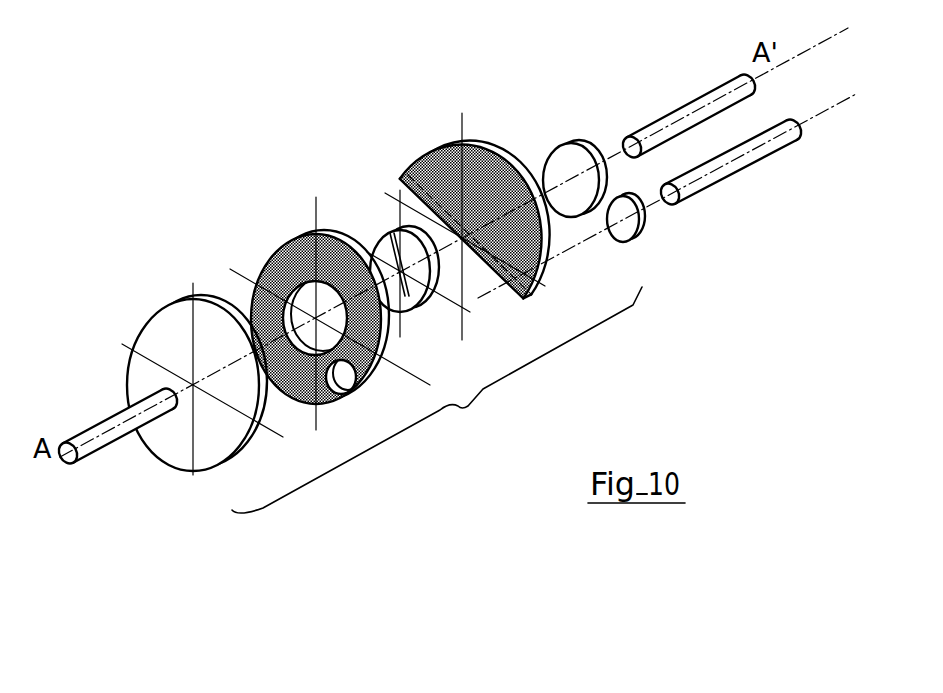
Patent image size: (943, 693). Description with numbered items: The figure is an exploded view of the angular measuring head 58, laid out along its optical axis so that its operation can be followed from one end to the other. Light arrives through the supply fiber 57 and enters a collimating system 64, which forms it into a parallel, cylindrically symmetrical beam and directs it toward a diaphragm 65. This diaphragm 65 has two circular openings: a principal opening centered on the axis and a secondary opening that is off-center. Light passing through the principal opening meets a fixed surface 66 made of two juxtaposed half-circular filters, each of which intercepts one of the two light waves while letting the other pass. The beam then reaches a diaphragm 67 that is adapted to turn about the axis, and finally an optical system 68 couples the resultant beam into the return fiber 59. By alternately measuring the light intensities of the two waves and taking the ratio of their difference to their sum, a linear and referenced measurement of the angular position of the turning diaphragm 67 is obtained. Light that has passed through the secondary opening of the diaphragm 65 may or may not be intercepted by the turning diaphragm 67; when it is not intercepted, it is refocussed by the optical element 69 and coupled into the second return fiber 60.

The supply fiber 57 is at (98, 454).
The measuring head 58 is at (437, 400).
The return fiber 59 is at (678, 116).
The second return fiber 60 is at (713, 181).
The collimating system 64 is at (180, 322).
The diaphragm 65 is at (292, 252).
The fixed surface 66 is at (383, 248).
The turning diaphragm 67 is at (434, 160).
The optical system 68 is at (553, 152).
The optical element 69 is at (641, 238).